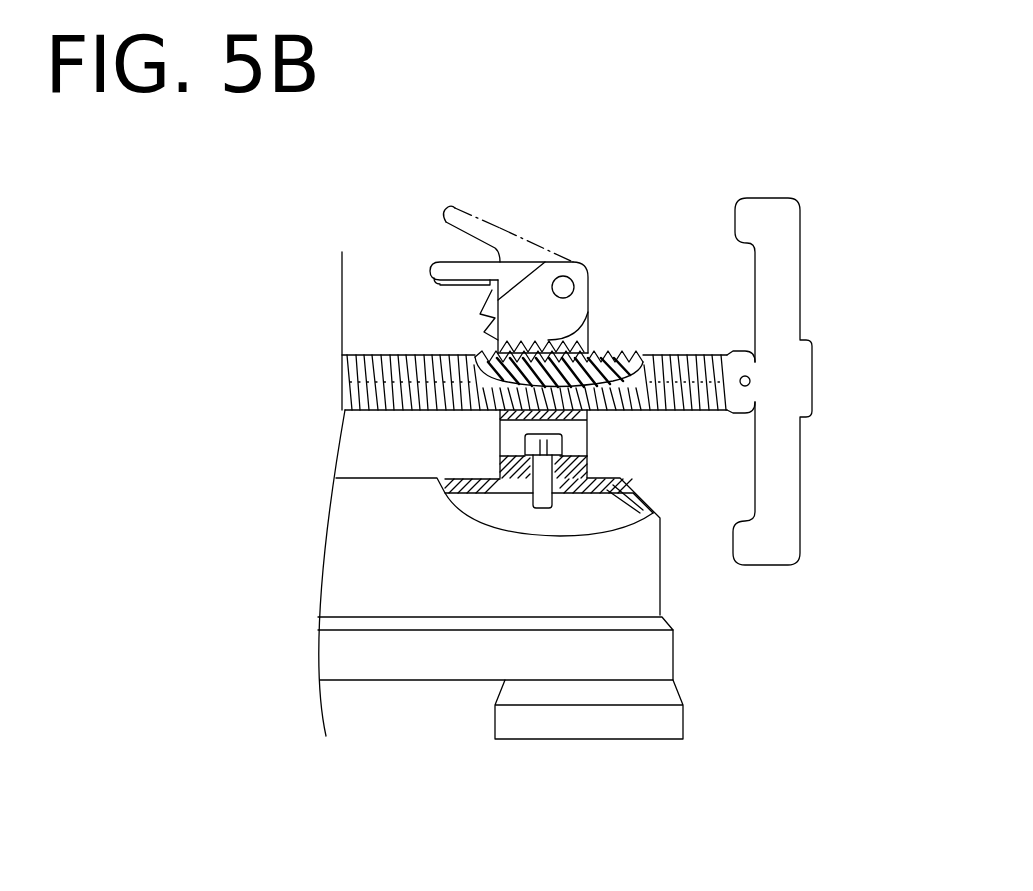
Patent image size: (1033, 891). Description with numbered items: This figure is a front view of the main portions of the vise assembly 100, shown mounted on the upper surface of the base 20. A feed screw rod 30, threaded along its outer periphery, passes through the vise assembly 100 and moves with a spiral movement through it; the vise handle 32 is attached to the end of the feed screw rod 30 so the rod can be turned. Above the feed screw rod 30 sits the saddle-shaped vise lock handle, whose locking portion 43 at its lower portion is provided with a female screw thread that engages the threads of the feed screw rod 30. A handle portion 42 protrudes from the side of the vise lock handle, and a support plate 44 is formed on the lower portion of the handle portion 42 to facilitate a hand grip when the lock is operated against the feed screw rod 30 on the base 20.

The vise assembly 100 is at (508, 247).
The handle portion 42 is at (442, 268).
The locking portion 43 is at (558, 257).
The support plate 44 is at (445, 287).
The feed screw rod 30 is at (378, 373).
The vise handle 32 is at (788, 303).
The base 20 is at (375, 570).